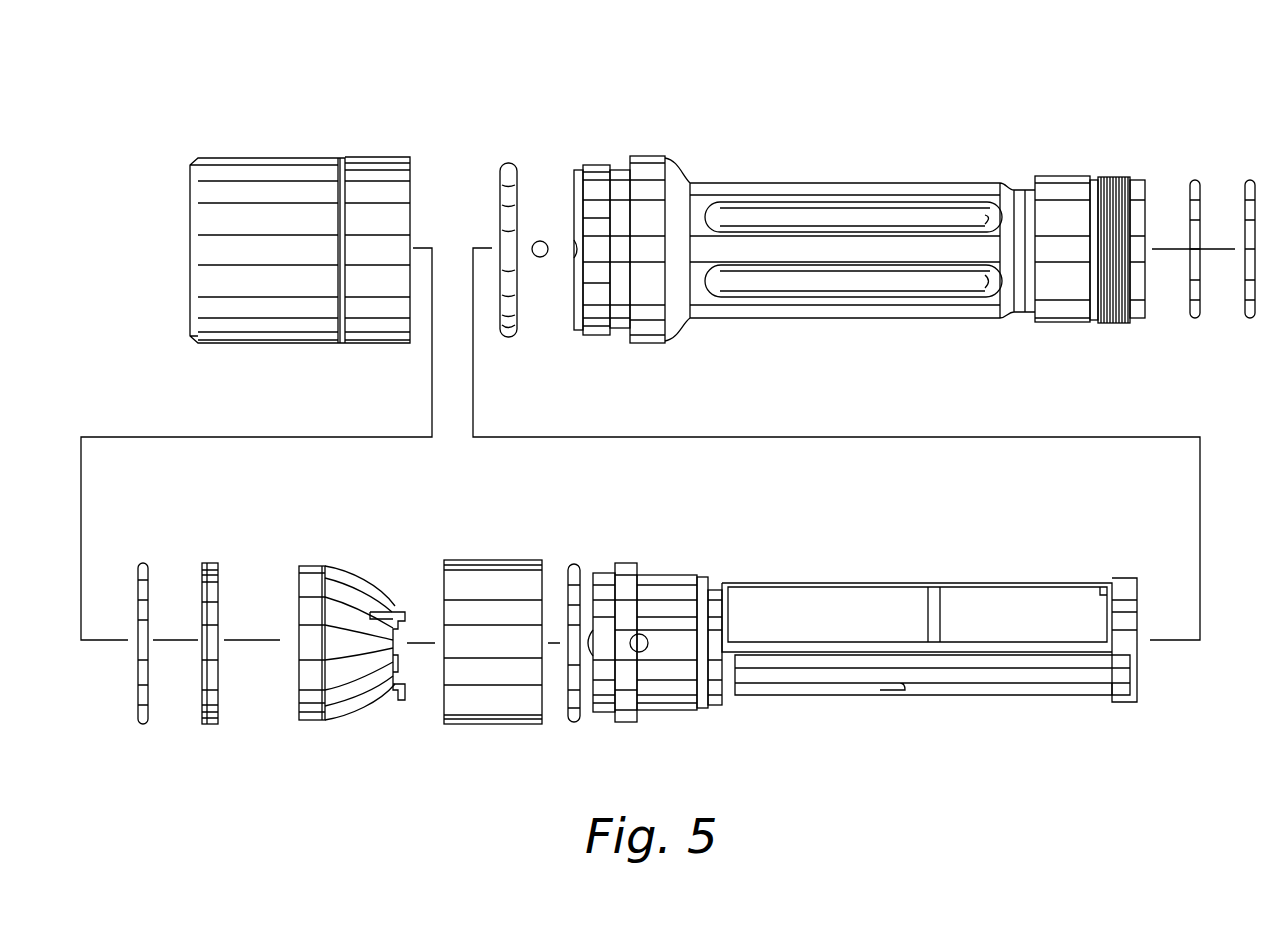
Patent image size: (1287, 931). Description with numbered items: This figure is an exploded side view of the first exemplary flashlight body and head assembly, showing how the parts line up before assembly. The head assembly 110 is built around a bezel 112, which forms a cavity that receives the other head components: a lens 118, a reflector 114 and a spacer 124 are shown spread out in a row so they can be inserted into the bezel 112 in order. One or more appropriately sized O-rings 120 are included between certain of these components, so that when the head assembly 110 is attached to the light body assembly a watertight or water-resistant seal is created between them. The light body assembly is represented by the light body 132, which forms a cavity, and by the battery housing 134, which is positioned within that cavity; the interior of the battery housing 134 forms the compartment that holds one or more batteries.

The head assembly 110 is at (1104, 51).
The bezel 112 is at (297, 157).
The reflector 114 is at (350, 568).
The lens 118 is at (215, 560).
The O-ring 120 is at (143, 560).
The spacer 124 is at (503, 562).
The light body 132 is at (862, 183).
The battery housing 134 is at (883, 583).